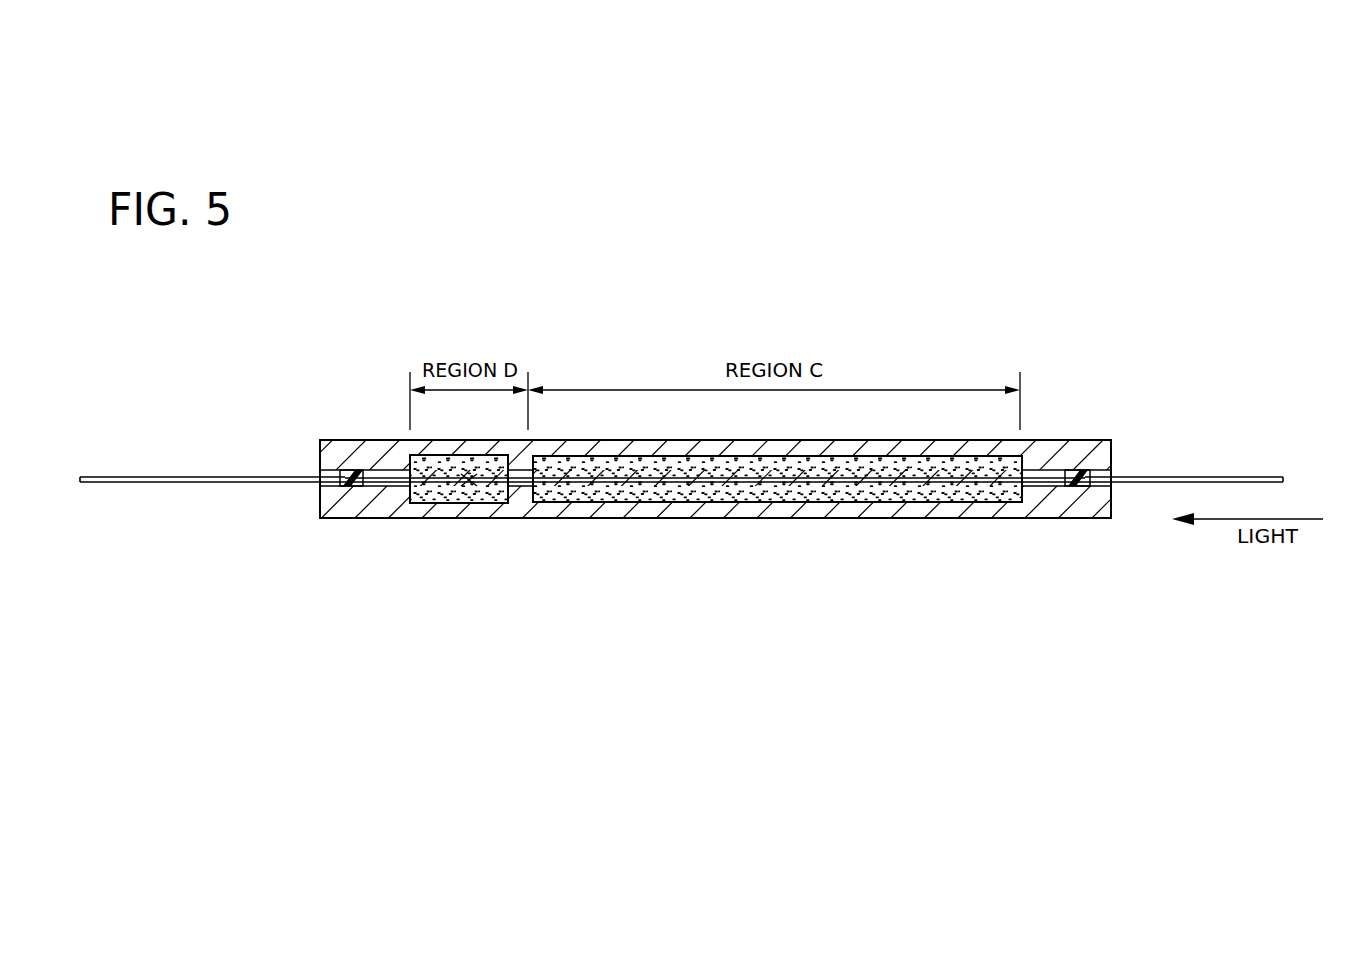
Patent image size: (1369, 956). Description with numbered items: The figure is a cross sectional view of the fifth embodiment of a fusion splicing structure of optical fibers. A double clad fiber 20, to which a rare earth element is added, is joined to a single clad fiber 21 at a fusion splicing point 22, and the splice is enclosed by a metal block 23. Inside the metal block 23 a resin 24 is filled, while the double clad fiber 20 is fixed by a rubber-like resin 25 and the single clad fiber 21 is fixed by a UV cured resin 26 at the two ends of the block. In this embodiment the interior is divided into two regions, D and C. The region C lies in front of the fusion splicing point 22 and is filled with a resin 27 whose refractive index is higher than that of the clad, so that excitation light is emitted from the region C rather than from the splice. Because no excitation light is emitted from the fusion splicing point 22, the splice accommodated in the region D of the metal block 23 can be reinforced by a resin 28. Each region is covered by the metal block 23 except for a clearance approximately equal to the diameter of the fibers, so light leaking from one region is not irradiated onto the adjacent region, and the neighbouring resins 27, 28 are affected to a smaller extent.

The double clad fiber 20 is at (1238, 474).
The single clad fiber 21 is at (137, 476).
The fusion splicing point 22 is at (470, 483).
The metal block 23 is at (1077, 447).
The resin 24 is at (715, 487).
The rubber-like resin 25 is at (1082, 487).
The UV cured resin 26 is at (352, 488).
The resin higher in refractive index than the clad 27 is at (820, 490).
The resin 28 is at (433, 498).